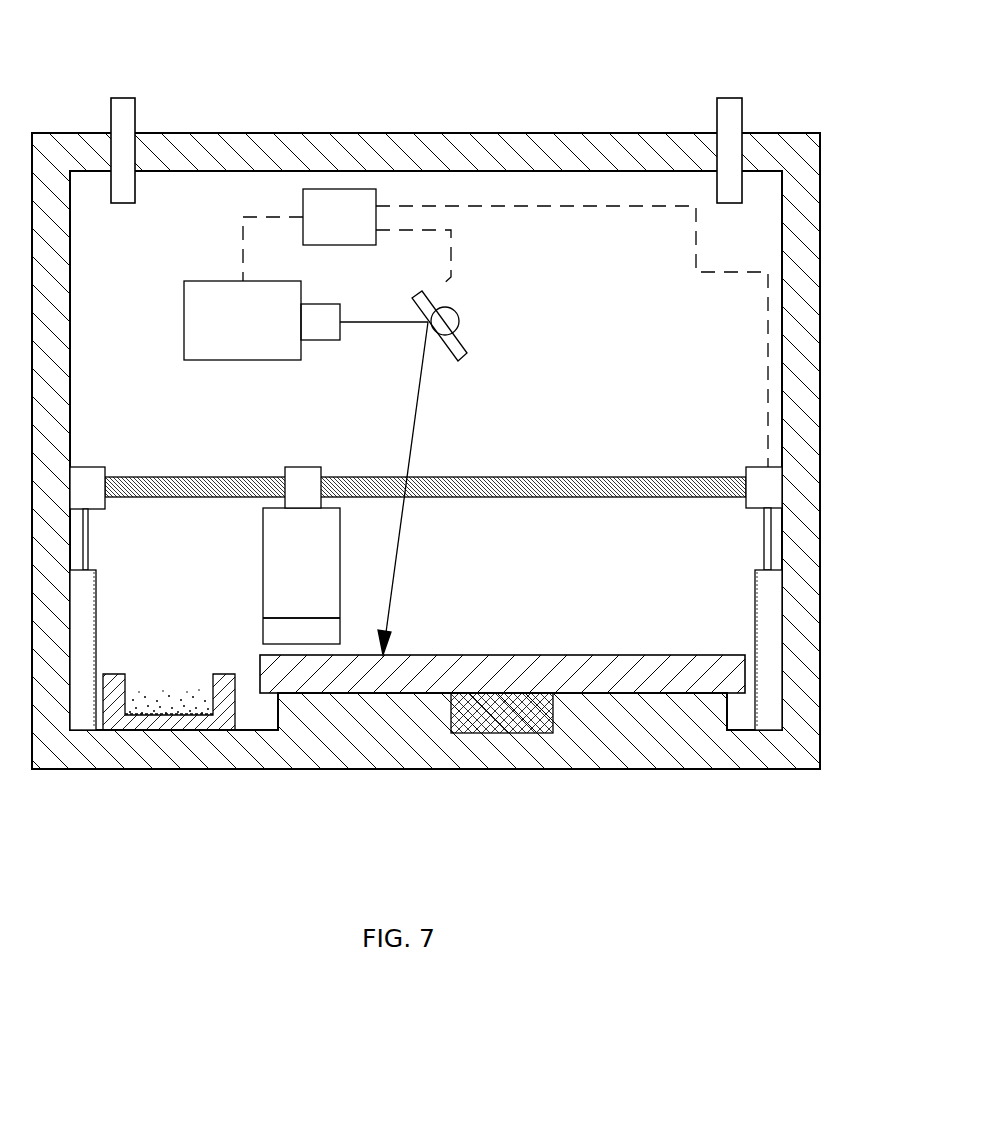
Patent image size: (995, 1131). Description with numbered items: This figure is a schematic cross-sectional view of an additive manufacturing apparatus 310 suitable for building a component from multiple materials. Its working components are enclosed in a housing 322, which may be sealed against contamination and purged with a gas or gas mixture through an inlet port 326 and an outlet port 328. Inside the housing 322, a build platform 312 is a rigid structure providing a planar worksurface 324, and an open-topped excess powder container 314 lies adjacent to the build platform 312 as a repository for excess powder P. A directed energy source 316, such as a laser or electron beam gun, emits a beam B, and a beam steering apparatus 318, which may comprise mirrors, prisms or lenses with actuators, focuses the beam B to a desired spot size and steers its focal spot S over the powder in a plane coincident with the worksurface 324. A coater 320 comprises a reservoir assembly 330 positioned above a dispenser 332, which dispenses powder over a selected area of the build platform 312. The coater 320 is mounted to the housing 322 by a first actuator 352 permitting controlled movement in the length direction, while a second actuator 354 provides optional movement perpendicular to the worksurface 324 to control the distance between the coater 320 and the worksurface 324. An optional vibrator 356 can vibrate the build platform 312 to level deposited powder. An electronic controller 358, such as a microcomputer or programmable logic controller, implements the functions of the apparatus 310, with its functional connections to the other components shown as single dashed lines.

The additive manufacturing apparatus 310 is at (422, 56).
The build platform 312 is at (657, 655).
The excess powder container 314 is at (169, 677).
The directed energy source 316 is at (262, 330).
The beam steering apparatus 318 is at (457, 317).
The coater 320 is at (277, 555).
The housing 322 is at (797, 208).
The worksurface 324 is at (488, 653).
The inlet port 326 is at (723, 128).
The outlet port 328 is at (132, 115).
The reservoir assembly 330 is at (321, 560).
The dispenser 332 is at (258, 575).
The first actuator 352 is at (675, 480).
The second actuator 354 is at (88, 522).
The vibrator 356 is at (525, 707).
The electronic controller 358 is at (359, 229).
The beam B is at (418, 405).
The focal spot S is at (385, 653).
The powder P is at (170, 672).